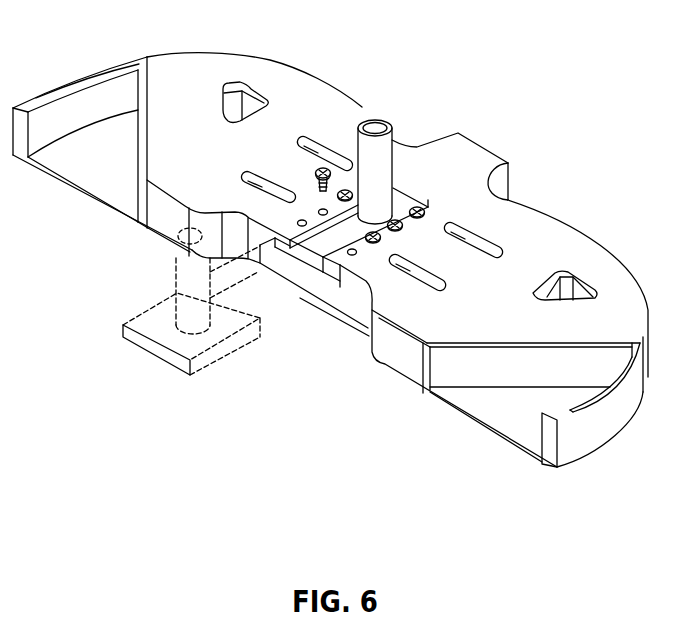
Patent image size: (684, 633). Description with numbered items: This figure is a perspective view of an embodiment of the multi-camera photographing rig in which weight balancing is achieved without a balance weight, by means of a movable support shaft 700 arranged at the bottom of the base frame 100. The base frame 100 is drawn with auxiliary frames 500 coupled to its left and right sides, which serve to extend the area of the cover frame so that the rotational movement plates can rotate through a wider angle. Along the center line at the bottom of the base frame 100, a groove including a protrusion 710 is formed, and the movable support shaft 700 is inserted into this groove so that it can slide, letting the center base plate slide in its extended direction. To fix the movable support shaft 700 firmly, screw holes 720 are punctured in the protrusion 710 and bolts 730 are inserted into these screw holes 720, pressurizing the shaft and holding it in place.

The base frame 100 is at (575, 242).
The auxiliary frames 500 is at (592, 440).
The movable support shaft 700 is at (389, 100).
The protrusion 710 is at (334, 232).
The screw holes 720 is at (317, 208).
The bolts 730 is at (326, 168).